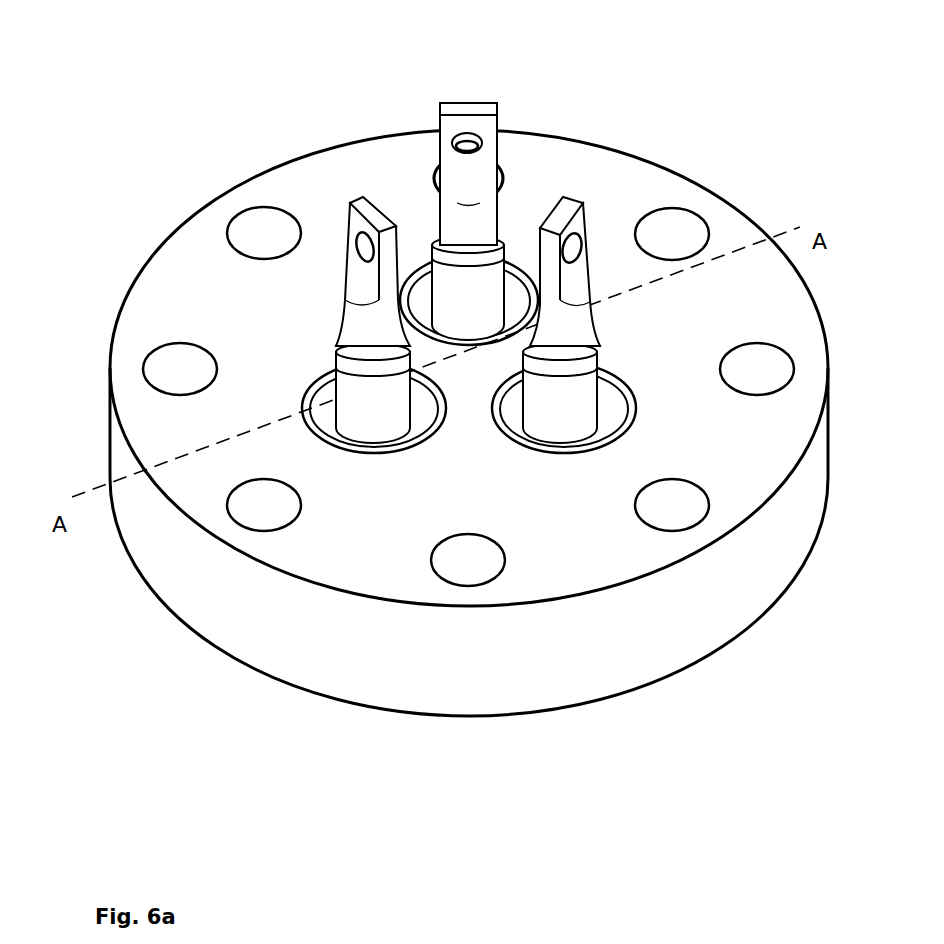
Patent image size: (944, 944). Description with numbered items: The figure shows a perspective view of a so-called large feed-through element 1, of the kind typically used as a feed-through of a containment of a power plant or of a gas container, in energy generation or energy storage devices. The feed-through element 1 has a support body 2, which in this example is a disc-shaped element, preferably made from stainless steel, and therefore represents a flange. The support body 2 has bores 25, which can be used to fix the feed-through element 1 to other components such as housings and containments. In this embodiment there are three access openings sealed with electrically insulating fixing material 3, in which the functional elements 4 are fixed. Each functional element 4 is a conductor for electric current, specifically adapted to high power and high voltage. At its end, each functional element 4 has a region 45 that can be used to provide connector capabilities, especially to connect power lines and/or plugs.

The feed-through element 1 is at (469, 463).
The support body 2 is at (340, 672).
The electrically insulating fixing material 3 is at (315, 392).
The functional element 4 is at (533, 405).
The bores 25 is at (243, 510).
The region 45 is at (395, 229).